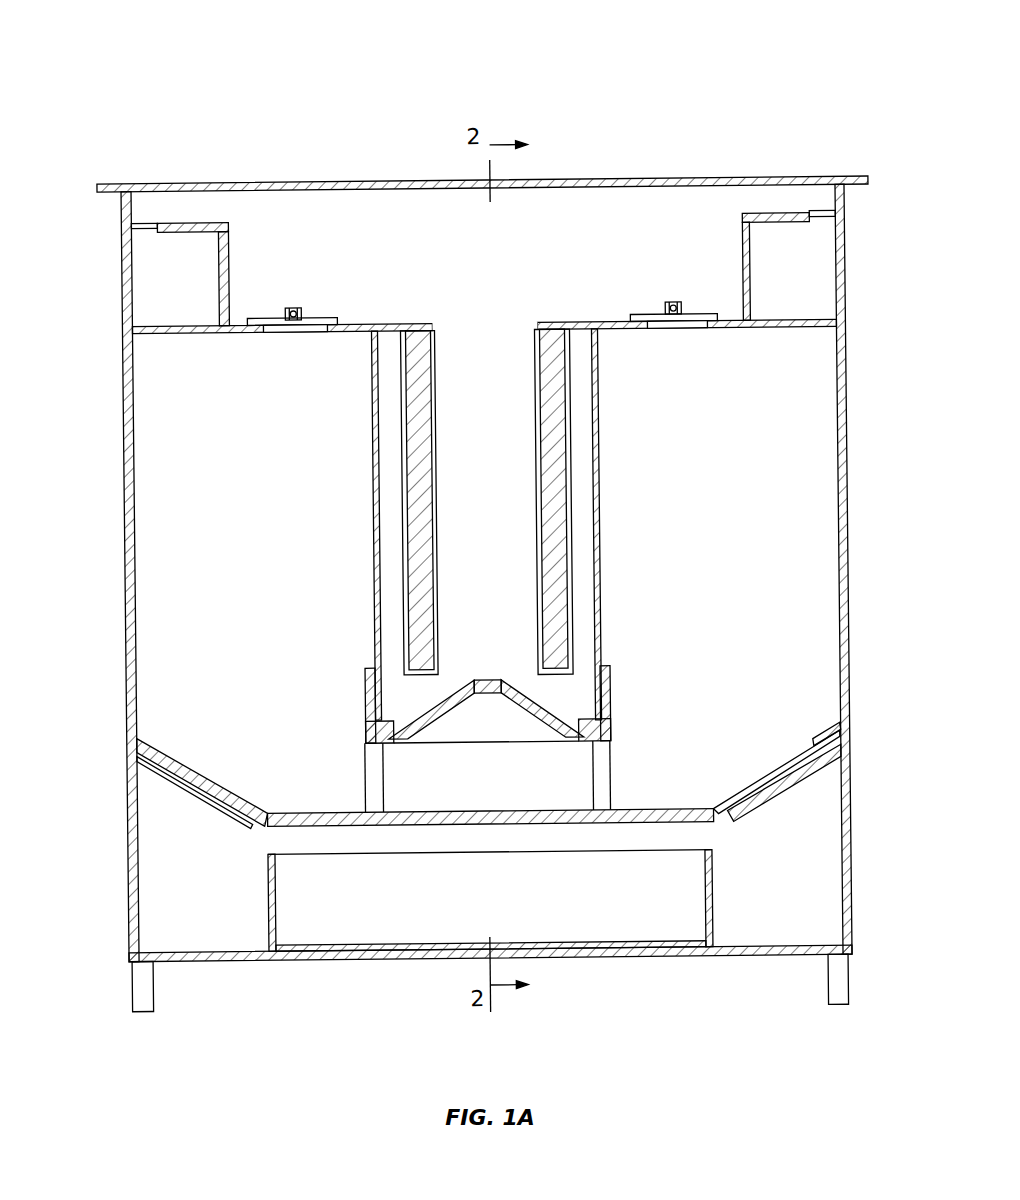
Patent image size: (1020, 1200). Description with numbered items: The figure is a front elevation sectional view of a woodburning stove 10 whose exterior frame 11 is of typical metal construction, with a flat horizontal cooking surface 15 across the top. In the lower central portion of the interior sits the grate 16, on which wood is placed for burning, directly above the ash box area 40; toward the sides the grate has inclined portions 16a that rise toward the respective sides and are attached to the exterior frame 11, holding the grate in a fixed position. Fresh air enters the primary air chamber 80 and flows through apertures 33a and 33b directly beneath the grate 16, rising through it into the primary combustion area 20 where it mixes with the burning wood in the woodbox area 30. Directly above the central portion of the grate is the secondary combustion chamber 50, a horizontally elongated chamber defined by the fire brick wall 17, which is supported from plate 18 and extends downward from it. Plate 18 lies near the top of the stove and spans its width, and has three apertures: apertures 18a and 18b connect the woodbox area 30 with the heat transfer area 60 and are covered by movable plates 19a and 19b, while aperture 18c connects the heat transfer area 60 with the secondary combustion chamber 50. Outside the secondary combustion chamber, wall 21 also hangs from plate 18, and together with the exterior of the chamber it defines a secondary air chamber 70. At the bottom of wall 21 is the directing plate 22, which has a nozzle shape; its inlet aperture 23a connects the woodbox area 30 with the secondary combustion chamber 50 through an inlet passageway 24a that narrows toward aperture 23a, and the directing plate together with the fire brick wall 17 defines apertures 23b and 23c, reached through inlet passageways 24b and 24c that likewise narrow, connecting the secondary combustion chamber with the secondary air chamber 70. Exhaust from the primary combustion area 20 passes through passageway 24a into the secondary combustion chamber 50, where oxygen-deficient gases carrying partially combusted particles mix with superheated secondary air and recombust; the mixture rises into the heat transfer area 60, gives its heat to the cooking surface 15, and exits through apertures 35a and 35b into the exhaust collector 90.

The woodburning stove 10 is at (740, 65).
The exterior frame 11 is at (850, 428).
The cooking surface 15 is at (355, 180).
The grate 16 is at (628, 810).
The inclined portions 16a is at (220, 785).
The fire brick wall 17 is at (427, 430).
The plate 18 is at (608, 320).
The aperture 18a is at (290, 330).
The aperture 18b is at (672, 331).
The aperture 18c is at (495, 322).
The movable plate 19a is at (315, 304).
The movable plate 19b is at (681, 303).
The primary combustion area 20 is at (495, 762).
The wall 21 is at (374, 485).
The directing plate 22 is at (609, 672).
The inlet aperture 23a is at (484, 680).
The aperture 23b is at (444, 682).
The aperture 23c is at (530, 684).
The inlet passageway 24a is at (504, 735).
The inlet passageway 24b is at (421, 692).
The inlet passageway 24c is at (553, 702).
The woodbox area 30 is at (172, 481).
The aperture 33a is at (273, 843).
The aperture 33b is at (697, 837).
The aperture 35a is at (148, 218).
The aperture 35b is at (826, 218).
The ash box area 40 is at (566, 929).
The secondary combustion chamber 50 is at (502, 549).
The heat transfer area 60 is at (540, 205).
The secondary air chamber 70 is at (395, 554).
The primary air chamber 80 is at (181, 870).
The exhaust collector 90 is at (166, 280).